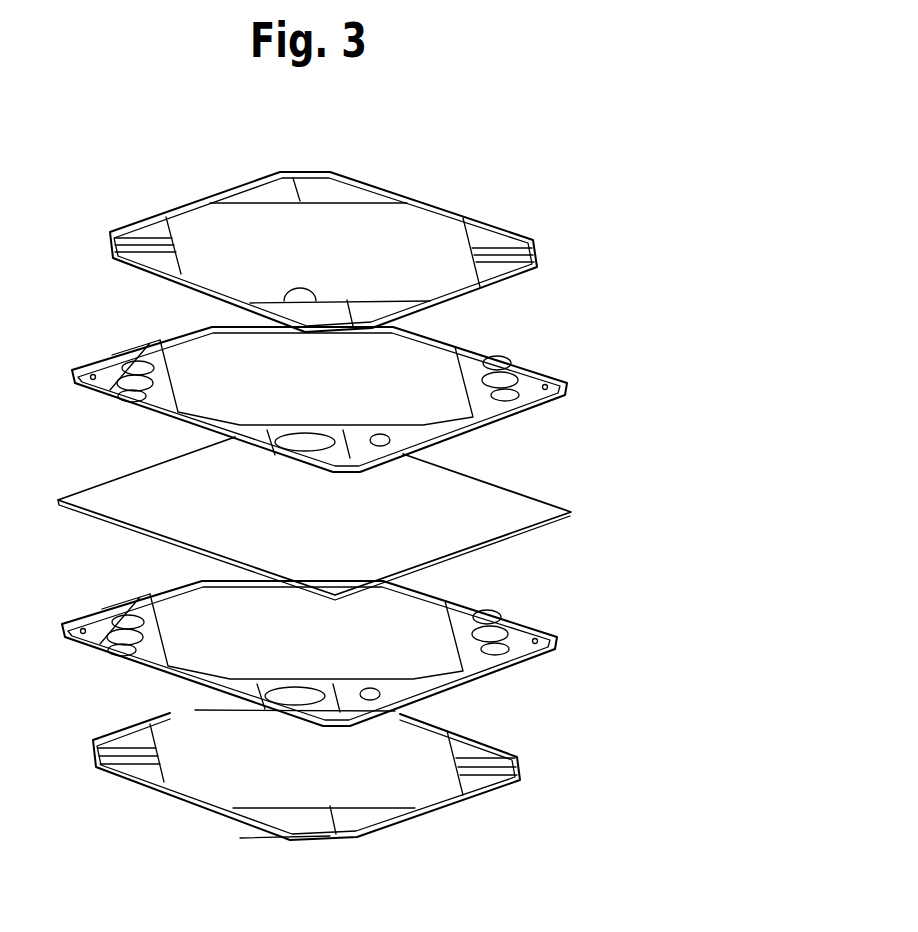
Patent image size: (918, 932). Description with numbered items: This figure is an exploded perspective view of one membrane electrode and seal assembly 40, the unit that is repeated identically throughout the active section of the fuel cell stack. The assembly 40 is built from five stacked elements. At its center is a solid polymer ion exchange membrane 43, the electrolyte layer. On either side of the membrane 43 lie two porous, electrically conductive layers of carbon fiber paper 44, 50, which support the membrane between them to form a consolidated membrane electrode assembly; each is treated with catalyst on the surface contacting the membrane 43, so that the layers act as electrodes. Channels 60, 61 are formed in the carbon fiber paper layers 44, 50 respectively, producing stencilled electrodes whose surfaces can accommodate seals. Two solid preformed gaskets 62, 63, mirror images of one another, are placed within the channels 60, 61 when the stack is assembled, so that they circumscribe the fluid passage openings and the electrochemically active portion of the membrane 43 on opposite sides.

The membrane electrode and seal assembly 40 is at (165, 829).
The solid polymer ion exchange membrane 43 is at (552, 485).
The carbon fiber paper 44 is at (527, 603).
The carbon fiber paper 50 is at (525, 347).
The channel 60 is at (147, 608).
The channel 61 is at (150, 345).
The solid preformed gasket 62 is at (492, 728).
The solid preformed gasket 63 is at (468, 206).